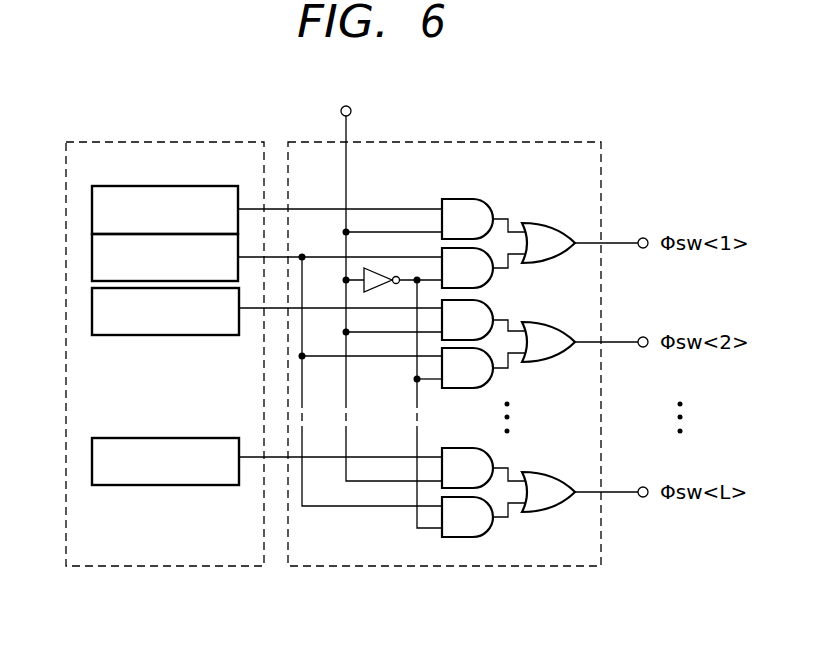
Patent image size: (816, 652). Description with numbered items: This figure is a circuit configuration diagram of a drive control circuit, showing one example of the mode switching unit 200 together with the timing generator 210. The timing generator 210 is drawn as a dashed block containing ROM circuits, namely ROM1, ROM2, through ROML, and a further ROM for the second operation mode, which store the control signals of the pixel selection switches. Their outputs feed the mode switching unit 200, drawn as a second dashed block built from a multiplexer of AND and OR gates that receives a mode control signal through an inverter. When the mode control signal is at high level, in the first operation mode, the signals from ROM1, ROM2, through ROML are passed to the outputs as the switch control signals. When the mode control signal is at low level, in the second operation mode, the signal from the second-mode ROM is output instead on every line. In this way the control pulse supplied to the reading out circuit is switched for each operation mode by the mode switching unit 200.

The timing generator 210 is at (165, 328).
The mode switching unit 200 is at (460, 322).
The ROM 1 ROM1 is at (165, 210).
The ROM 2 ROM2 is at (165, 311).
The ROM L ROML is at (165, 461).